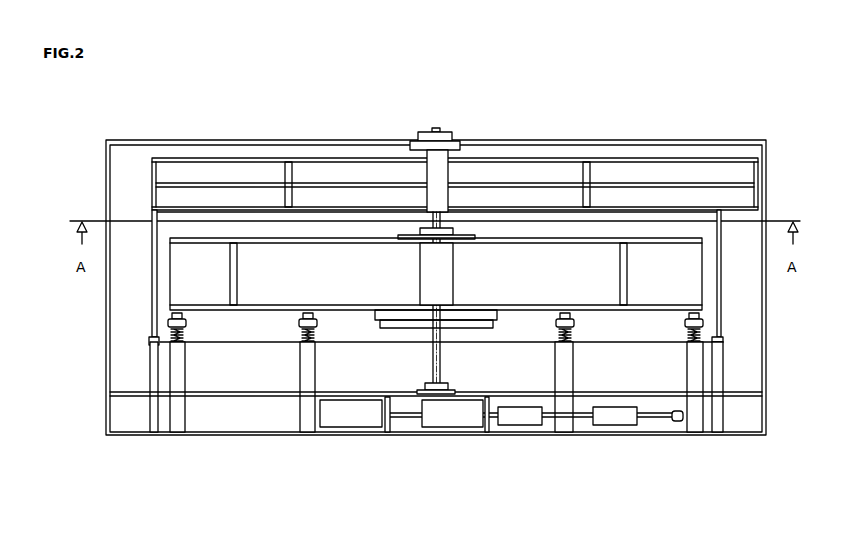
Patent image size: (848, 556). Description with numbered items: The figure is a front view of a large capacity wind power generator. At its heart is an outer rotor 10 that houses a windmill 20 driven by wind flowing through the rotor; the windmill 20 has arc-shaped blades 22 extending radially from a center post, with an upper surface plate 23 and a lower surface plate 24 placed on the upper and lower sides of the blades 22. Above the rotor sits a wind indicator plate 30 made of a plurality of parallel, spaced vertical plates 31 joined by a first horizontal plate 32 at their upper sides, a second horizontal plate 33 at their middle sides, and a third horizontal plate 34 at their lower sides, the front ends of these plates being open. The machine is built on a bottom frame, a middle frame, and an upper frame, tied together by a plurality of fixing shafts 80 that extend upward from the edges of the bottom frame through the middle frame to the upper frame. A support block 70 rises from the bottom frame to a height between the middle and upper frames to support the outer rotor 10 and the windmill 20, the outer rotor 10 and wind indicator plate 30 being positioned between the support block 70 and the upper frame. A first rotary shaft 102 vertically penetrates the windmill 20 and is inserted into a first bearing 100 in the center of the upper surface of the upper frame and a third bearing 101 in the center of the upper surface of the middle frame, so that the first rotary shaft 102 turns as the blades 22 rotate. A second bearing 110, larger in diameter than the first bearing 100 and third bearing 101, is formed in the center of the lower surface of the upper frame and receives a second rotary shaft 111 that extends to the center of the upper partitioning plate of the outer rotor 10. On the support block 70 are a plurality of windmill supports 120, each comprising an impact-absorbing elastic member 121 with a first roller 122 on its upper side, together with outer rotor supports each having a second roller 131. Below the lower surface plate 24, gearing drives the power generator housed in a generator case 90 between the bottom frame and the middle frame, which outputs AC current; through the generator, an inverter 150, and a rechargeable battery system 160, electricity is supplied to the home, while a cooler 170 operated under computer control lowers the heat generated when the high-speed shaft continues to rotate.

The outer rotor 10 is at (152, 268).
The windmill 20 is at (487, 284).
The blades 22 is at (598, 272).
The upper surface plate 23 is at (673, 238).
The lower surface plate 24 is at (663, 303).
The wind indicator plate 30 is at (457, 147).
The vertical plates 31 is at (612, 172).
The first horizontal plate 32 is at (243, 160).
The second horizontal plate 33 is at (292, 160).
The third horizontal plate 34 is at (520, 210).
The support block 70 is at (728, 373).
The fixing shafts 80 is at (106, 170).
The generator case 90 is at (450, 418).
The first bearing 100 is at (460, 140).
The third bearing 101 is at (442, 385).
The first rotary shaft 102 is at (437, 362).
The second bearing 110 is at (462, 148).
The second rotary shaft 111 is at (431, 192).
The windmill supports 120 is at (373, 399).
The elastic member 121 is at (170, 325).
The first roller 122 is at (184, 318).
The second roller 131 is at (150, 340).
The inverter 150 is at (520, 420).
The rechargeable battery system 160 is at (616, 422).
The cooler 170 is at (350, 420).